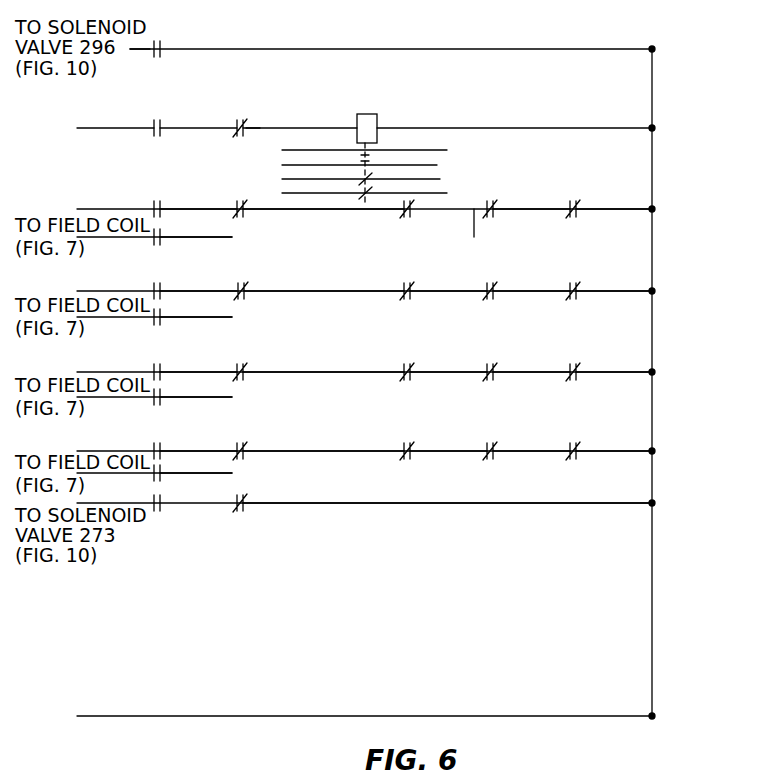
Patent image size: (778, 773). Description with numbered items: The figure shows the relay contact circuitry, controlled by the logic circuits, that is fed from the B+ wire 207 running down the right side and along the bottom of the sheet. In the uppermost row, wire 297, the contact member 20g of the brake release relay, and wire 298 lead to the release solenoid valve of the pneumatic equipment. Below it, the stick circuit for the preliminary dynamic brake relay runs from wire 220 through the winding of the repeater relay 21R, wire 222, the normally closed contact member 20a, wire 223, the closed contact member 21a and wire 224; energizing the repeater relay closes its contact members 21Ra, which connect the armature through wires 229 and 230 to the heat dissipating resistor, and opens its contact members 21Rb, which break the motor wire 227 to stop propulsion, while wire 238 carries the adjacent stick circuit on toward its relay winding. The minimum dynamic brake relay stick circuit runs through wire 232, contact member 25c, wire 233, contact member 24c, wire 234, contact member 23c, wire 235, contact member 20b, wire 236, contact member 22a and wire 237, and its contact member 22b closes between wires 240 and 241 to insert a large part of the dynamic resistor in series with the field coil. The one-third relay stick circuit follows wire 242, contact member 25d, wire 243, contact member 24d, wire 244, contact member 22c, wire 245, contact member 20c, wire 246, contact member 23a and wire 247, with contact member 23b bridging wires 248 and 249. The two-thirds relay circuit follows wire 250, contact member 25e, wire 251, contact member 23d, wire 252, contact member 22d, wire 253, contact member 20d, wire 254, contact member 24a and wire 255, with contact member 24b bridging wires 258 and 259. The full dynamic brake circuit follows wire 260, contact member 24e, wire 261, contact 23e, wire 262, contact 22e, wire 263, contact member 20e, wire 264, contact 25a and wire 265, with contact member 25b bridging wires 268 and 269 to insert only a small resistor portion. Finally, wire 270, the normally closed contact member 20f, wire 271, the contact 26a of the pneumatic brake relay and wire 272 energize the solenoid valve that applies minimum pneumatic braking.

The B+ wire 207 is at (653, 328).
The wire 297 is at (581, 50).
The wire 298 is at (138, 51).
The contact member of BR relay 20g is at (161, 46).
The wire 220 is at (582, 127).
The wire 224 is at (127, 127).
The contact member of P.D. relay 21a is at (160, 126).
The wire 223 is at (176, 137).
The normally closed contact member of BR relay 20a is at (243, 126).
The wire 222 is at (249, 131).
The repeater relay 21R is at (366, 147).
The contact members of repeater relay 21Ra is at (368, 156).
The contact members of repeater relay 21Rb is at (371, 182).
The wire 229 is at (345, 149).
The wire 230 is at (345, 164).
The wire 227 is at (345, 178).
The wire 238 is at (345, 192).
The wire 237 is at (127, 208).
The contact member of M.D. relay 22a is at (176, 200).
The wire 236 is at (207, 208).
The contact member of BR relay 20b is at (244, 213).
The wire 235 is at (333, 210).
The normally closed contact member of ⅓D relay 23c is at (410, 212).
The wire 234 is at (483, 237).
The contact member of ⅔D relay 24c is at (493, 212).
The wire 233 is at (557, 208).
The contact member of FD relay 25c is at (576, 212).
The wire 232 is at (638, 208).
The contact member of M.D. relay 22b is at (160, 235).
The wire 240 is at (154, 238).
The wire 241 is at (232, 237).
The wire 246 is at (226, 289).
The wire 247 is at (127, 290).
The contact member of ⅓D relay 23a is at (160, 289).
The normally closed contact member of BR relay 20c is at (244, 289).
The wire 245 is at (352, 272).
The normally closed contact member of M.D. relay 22c is at (410, 294).
The wire 244 is at (432, 272).
The contact member of ⅔D relay 24d is at (493, 294).
The wire 243 is at (515, 272).
The contact member of FD relay 25d is at (576, 294).
The wire 242 is at (638, 290).
The contact member of ⅓D relay 23b is at (160, 315).
The wire 248 is at (105, 318).
The wire 249 is at (232, 317).
The wire 254 is at (226, 370).
The wire 255 is at (127, 371).
The contact member of ⅔D relay 24a is at (160, 370).
The normally closed contact member of BR relay 20d is at (243, 370).
The wire 253 is at (352, 353).
The normally closed contact member of M.D. relay 22d is at (410, 375).
The wire 252 is at (432, 353).
The normally closed contact member of ⅓D relay 23d is at (493, 375).
The wire 251 is at (515, 353).
The normally closed contact member of FD relay 25e is at (576, 375).
The wire 250 is at (638, 371).
The contact member of ⅔D relay 24b is at (160, 395).
The wire 258 is at (105, 398).
The wire 259 is at (232, 397).
The wire 264 is at (226, 449).
The wire 265 is at (127, 450).
The contact member of FD relay 25a is at (160, 449).
The normally closed contact member of BR relay 20e is at (243, 449).
The wire 263 is at (352, 432).
The normally closed contact of M.D. relay 22e is at (410, 454).
The wire 262 is at (432, 432).
The normally closed contact of ⅓D relay 23e is at (493, 454).
The wire 261 is at (515, 432).
The normally closed contact member of ⅔D relay 24e is at (576, 454).
The wire 260 is at (638, 450).
The contact member of FD relay 25b is at (160, 471).
The wire 268 is at (103, 474).
The wire 269 is at (232, 473).
The contact member of PB relay 26a is at (160, 501).
The normally closed contact member of BR relay 20f is at (243, 501).
The wire 270 is at (395, 502).
The wire 272 is at (154, 505).
The wire 271 is at (227, 505).